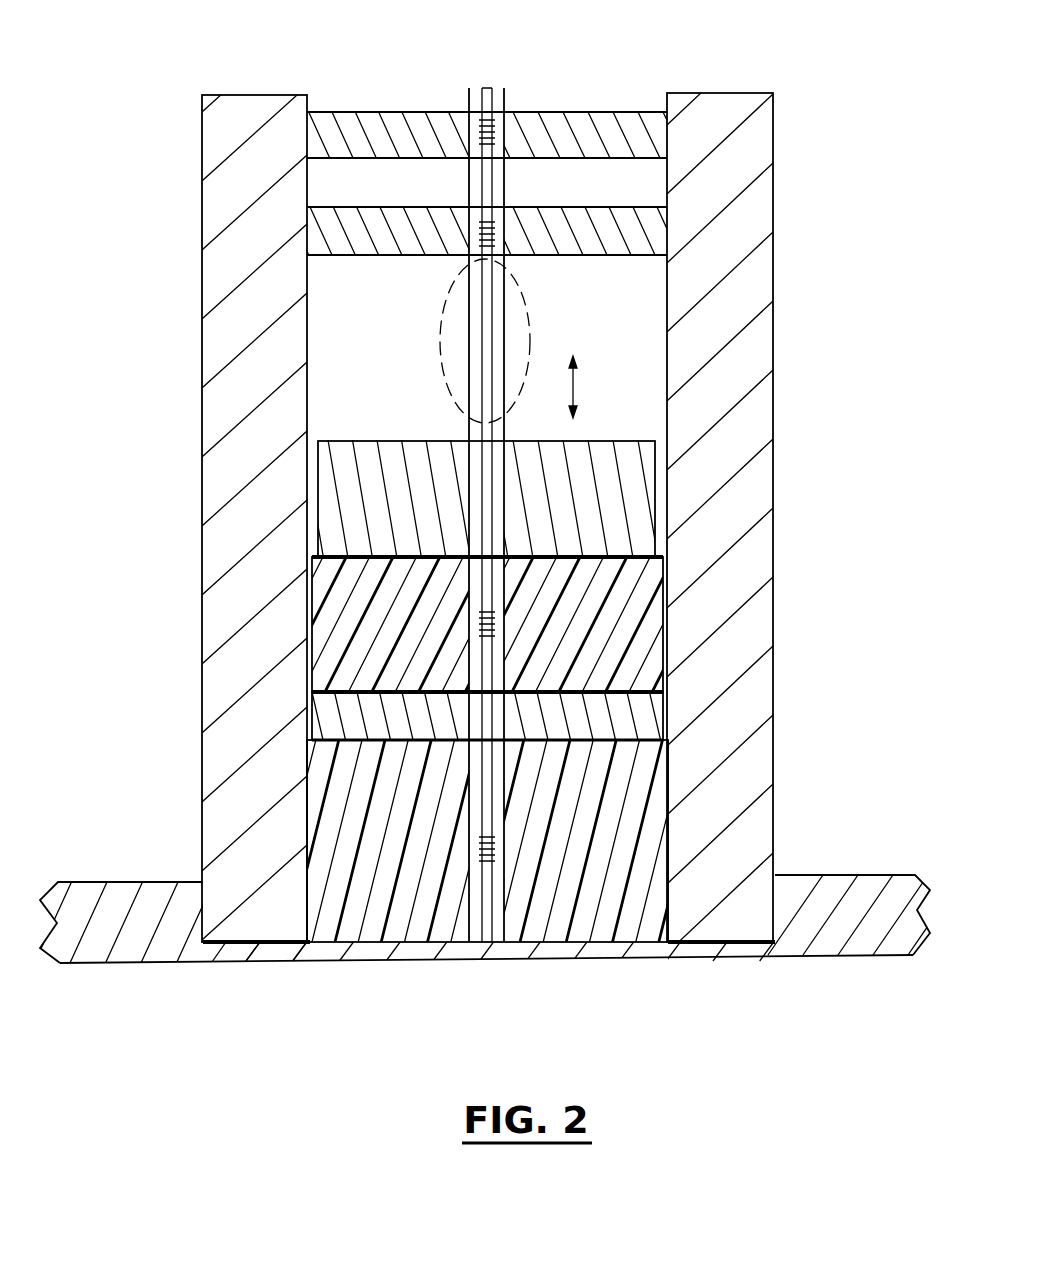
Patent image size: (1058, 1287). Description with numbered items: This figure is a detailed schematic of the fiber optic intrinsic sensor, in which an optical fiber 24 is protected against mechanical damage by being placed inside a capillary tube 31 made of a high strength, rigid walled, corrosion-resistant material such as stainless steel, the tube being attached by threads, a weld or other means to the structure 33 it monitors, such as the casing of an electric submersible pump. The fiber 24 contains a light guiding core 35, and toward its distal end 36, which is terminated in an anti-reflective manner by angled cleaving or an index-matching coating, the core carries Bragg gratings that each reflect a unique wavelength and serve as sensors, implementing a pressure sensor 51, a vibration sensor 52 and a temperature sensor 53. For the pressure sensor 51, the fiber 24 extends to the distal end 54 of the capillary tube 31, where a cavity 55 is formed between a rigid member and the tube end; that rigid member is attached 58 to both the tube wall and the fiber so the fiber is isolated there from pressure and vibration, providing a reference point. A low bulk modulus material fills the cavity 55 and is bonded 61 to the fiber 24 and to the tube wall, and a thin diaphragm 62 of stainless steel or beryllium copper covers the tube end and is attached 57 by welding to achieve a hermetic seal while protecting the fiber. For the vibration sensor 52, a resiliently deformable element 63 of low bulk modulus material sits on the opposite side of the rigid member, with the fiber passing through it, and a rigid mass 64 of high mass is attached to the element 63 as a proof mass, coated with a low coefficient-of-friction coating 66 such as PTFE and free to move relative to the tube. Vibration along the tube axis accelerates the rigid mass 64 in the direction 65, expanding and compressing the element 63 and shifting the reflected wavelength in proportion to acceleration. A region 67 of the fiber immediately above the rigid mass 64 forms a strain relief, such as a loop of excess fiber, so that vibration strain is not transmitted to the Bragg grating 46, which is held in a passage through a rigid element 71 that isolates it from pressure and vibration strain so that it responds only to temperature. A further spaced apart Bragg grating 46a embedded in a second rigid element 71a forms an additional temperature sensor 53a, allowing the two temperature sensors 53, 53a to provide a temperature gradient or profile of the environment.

The optical fiber 24 is at (505, 104).
The capillary tube 31 is at (212, 218).
The structure 33 is at (916, 876).
The light guiding core 35 is at (482, 87).
The distal end 36 is at (498, 957).
The Bragg grating 46 is at (494, 218).
The Bragg grating 46a is at (505, 128).
The pressure sensor 51 is at (824, 786).
The vibration sensor 52 is at (798, 489).
The temperature sensor 53 is at (798, 489).
The temperature sensor 53a is at (826, 119).
The distal end of the capillary tube 54 is at (262, 932).
The cavity 55 is at (668, 795).
The attachment 57 is at (230, 950).
The attachment 58 is at (312, 728).
The bond 61 is at (316, 798).
The diaphragm 62 is at (740, 957).
The resiliently deformable element 63 is at (655, 593).
The rigid mass 64 is at (499, 490).
The direction 65 is at (576, 387).
The low coefficient-of-friction coating 66 is at (318, 483).
The region 67 is at (444, 330).
The rigid element 71 is at (350, 226).
The rigid element 71a is at (348, 116).